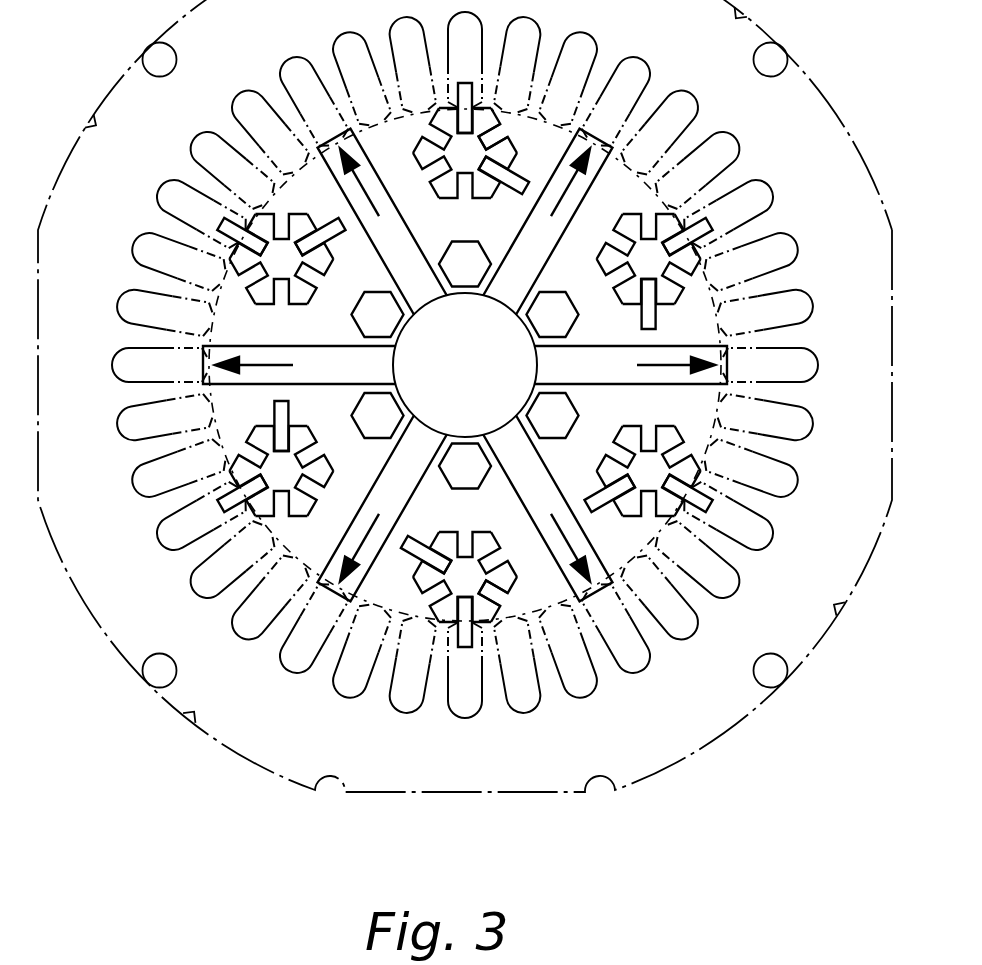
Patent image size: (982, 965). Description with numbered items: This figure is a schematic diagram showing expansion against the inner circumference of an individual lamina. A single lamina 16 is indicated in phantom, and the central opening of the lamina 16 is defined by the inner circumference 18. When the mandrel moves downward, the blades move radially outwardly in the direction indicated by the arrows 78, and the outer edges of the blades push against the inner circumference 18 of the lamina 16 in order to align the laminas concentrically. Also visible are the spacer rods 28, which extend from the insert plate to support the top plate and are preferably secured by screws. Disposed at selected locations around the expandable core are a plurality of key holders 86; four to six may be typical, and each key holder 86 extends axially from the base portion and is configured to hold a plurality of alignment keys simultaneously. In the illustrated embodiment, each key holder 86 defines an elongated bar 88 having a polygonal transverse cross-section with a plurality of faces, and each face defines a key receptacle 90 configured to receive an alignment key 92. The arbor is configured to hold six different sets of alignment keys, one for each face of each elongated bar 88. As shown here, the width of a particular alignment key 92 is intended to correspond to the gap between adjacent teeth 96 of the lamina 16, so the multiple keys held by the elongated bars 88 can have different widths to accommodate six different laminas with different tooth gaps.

The lamina 16 is at (800, 98).
The inner circumference 18 is at (288, 542).
The spacer rods 28 is at (484, 246).
The arrows 78 is at (383, 186).
The key holders 86 is at (465, 365).
The elongated bar 88 is at (457, 112).
The key receptacle 90 is at (500, 132).
The alignment key 92 is at (334, 258).
The teeth 96 is at (212, 310).